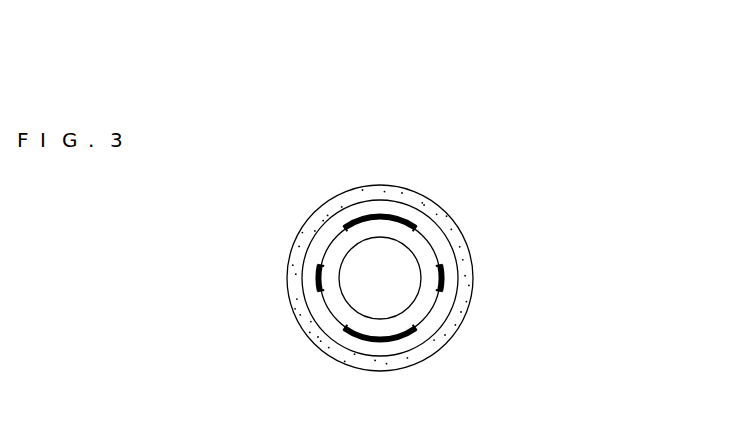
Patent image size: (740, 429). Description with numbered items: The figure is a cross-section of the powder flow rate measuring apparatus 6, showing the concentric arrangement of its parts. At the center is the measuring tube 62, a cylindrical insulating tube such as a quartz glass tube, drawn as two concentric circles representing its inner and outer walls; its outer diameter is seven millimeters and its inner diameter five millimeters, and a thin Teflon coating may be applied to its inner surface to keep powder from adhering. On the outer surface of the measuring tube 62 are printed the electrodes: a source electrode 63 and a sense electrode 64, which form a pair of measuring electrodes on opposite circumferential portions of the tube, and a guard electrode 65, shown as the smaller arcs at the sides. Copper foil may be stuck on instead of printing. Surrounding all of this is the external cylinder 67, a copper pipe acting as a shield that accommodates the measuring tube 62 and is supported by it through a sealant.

The powder flow rate measuring apparatus 6 is at (407, 181).
The measuring tube 62 is at (420, 310).
The source electrode 63 is at (350, 216).
The sense electrode 64 is at (349, 336).
The guard electrode 65 is at (312, 280).
The external cylinder 67 is at (452, 213).